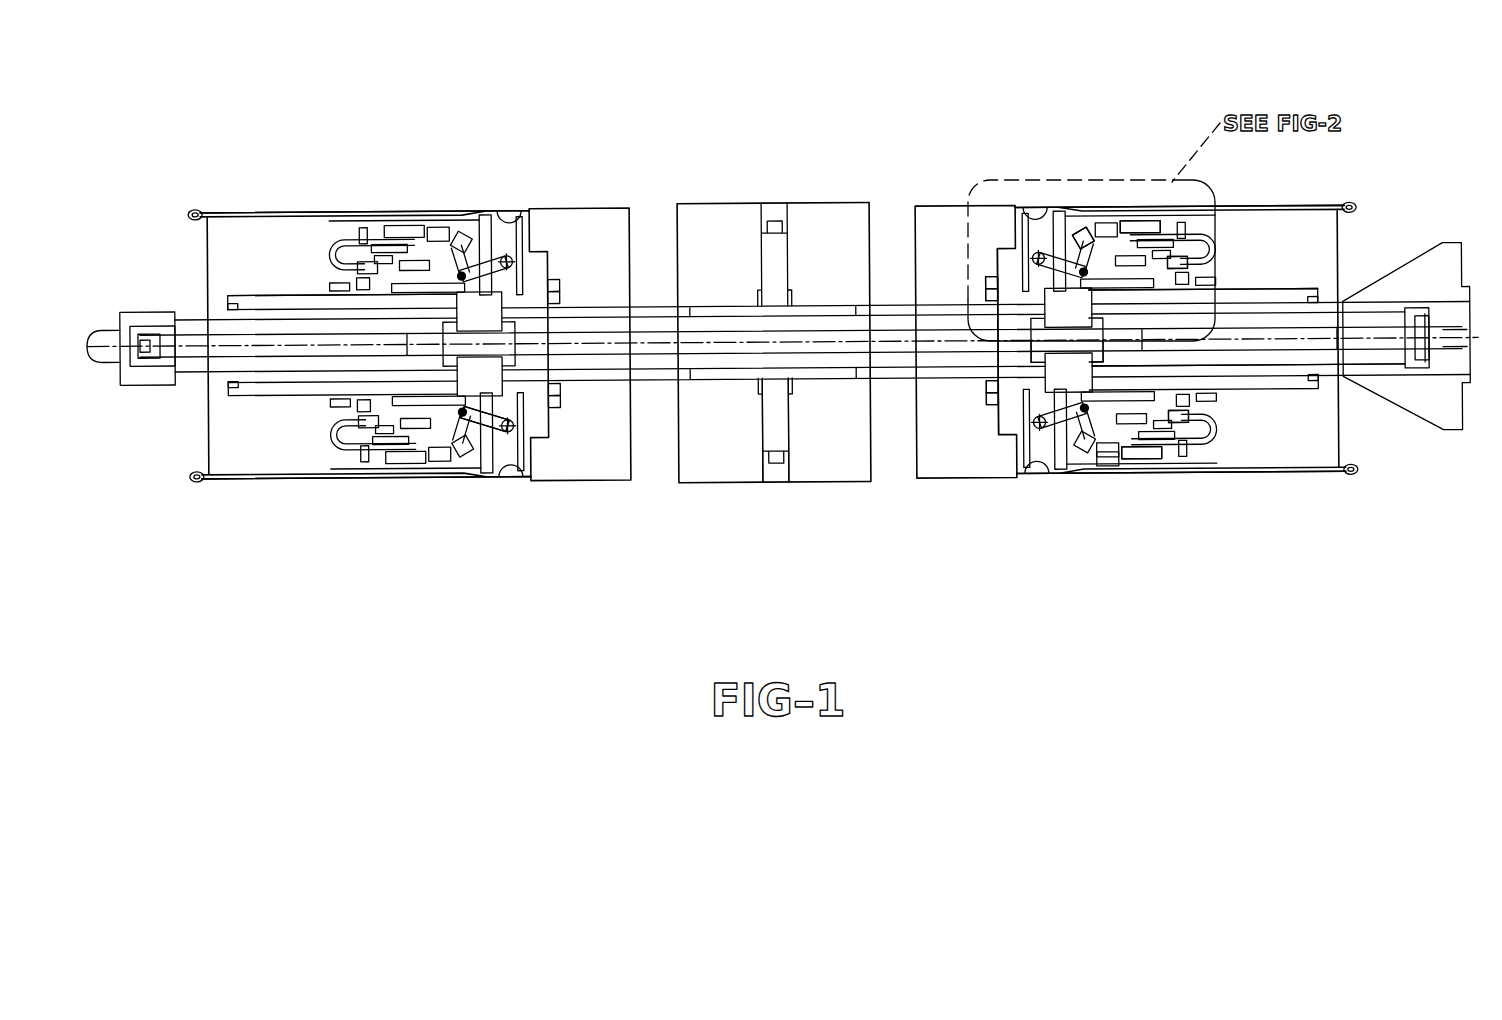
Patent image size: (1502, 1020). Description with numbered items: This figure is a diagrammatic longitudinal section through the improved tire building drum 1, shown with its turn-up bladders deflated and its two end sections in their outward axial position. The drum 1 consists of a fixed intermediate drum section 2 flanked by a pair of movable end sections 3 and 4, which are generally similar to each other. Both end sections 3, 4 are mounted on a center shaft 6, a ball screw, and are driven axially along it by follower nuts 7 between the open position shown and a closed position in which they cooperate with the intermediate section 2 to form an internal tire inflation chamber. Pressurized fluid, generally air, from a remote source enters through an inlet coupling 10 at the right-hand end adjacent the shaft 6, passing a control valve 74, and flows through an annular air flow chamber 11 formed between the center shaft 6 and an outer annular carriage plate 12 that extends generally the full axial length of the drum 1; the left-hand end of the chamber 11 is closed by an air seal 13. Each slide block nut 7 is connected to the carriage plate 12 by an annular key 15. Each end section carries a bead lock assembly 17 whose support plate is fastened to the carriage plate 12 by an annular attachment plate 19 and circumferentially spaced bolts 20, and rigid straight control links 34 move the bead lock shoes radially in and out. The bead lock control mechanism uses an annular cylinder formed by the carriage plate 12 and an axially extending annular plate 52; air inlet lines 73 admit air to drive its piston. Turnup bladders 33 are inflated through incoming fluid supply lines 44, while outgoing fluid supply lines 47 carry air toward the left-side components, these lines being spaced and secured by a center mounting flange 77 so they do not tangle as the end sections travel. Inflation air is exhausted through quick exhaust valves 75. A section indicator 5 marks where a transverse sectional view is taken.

The tire building drum 1 is at (558, 82).
The fixed intermediate drum section 2 is at (760, 200).
The movable end section 3 is at (914, 200).
The movable end section 4 is at (588, 200).
The section line 5- 5 is at (1065, 163).
The center shaft 6 is at (895, 333).
The follower nut 7 is at (511, 362).
The inlet coupling 10 is at (1437, 322).
The annular air flow chamber 11 is at (192, 326).
The annular carriage plate 12 is at (1237, 370).
The air seal 13 is at (135, 312).
The annular key 15 is at (1058, 380).
The bead lock assembly 17 is at (990, 218).
The annular attachment plate 19 is at (988, 290).
The bolts 20 is at (990, 401).
The turnup bladder 33 is at (256, 211).
The control links 34 is at (486, 420).
The incoming fluid supply line 44 is at (1197, 230).
The outgoing fluid supply line 47 is at (1082, 225).
The annular plate 52 is at (1127, 413).
The air inlet lines 73 is at (1200, 258).
The control valve 74 is at (1430, 363).
The quick exhaust valves 75 is at (150, 363).
The center mounting flange 77 is at (758, 428).